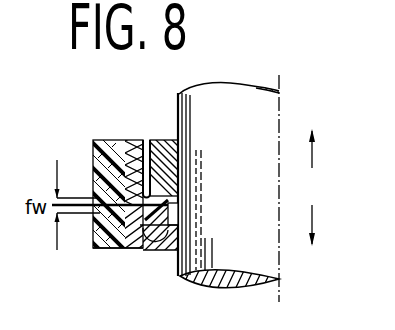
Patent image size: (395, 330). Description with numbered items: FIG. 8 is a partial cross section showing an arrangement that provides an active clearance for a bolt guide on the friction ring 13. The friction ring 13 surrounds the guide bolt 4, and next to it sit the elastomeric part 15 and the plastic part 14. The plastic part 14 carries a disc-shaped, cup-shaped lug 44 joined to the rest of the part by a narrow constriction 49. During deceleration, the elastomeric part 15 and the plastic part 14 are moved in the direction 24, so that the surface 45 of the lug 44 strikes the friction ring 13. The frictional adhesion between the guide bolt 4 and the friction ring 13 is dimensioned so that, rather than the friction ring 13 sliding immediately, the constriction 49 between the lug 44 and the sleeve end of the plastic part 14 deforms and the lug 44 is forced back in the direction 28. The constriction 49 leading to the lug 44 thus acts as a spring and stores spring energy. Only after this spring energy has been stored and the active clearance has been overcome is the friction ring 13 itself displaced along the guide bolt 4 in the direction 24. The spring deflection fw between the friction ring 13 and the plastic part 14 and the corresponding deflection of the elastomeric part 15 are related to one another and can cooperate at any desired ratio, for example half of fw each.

The guide bolt 4 is at (200, 118).
The friction ring 13 is at (157, 148).
The plastic part 14 is at (143, 142).
The elastomeric part 15 is at (95, 142).
The direction of movement 24 is at (312, 168).
The direction of lug deflection 28 is at (313, 216).
The disc-shaped lug 44 is at (163, 238).
The surface of the lug 45 is at (168, 197).
The constriction 49 is at (136, 248).